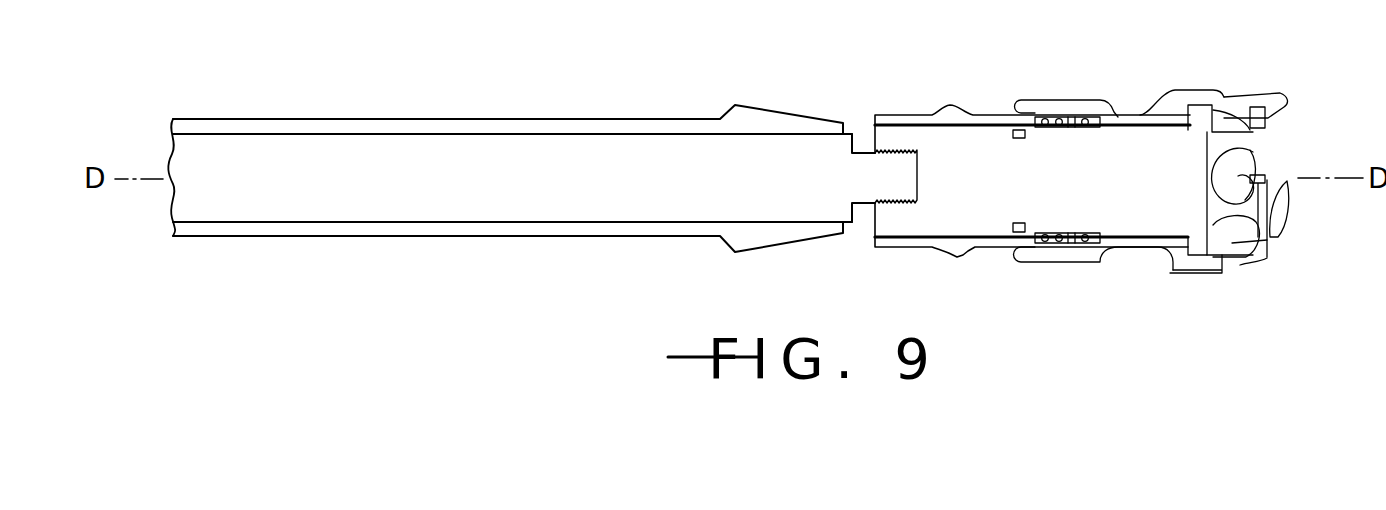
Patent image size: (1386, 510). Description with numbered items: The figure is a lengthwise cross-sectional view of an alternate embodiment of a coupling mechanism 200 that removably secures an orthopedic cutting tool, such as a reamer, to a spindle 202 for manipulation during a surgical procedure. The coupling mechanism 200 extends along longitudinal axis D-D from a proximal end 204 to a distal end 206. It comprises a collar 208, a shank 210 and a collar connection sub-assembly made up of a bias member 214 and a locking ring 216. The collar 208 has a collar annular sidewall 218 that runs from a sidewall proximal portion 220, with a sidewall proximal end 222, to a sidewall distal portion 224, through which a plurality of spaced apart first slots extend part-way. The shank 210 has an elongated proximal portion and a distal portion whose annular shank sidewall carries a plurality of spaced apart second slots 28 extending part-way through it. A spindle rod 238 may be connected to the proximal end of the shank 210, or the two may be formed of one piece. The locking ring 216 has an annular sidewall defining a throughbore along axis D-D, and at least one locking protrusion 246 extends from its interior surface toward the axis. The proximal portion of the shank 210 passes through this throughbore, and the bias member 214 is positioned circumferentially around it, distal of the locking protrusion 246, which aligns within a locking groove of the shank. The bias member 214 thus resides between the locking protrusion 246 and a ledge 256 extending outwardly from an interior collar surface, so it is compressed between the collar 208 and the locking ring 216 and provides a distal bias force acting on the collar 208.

The coupling mechanism 200 is at (1146, 90).
The spindle 202 is at (418, 167).
The spindle rod 238 is at (492, 195).
The proximal end 204 is at (886, 143).
The locking ring 216 is at (962, 257).
The sidewall proximal end 222 is at (965, 112).
The bias member 214 is at (1063, 245).
The ledge 256 is at (1093, 123).
The locking protrusion 246 is at (1020, 222).
The collar annular sidewall 218 is at (1122, 117).
The sidewall proximal portion 220 is at (1125, 245).
The sidewall distal portion 224 is at (1200, 103).
The collar 208 is at (1173, 248).
The distal end 206 is at (1255, 138).
The second slots 28 is at (1237, 171).
The shank 210 is at (1183, 198).